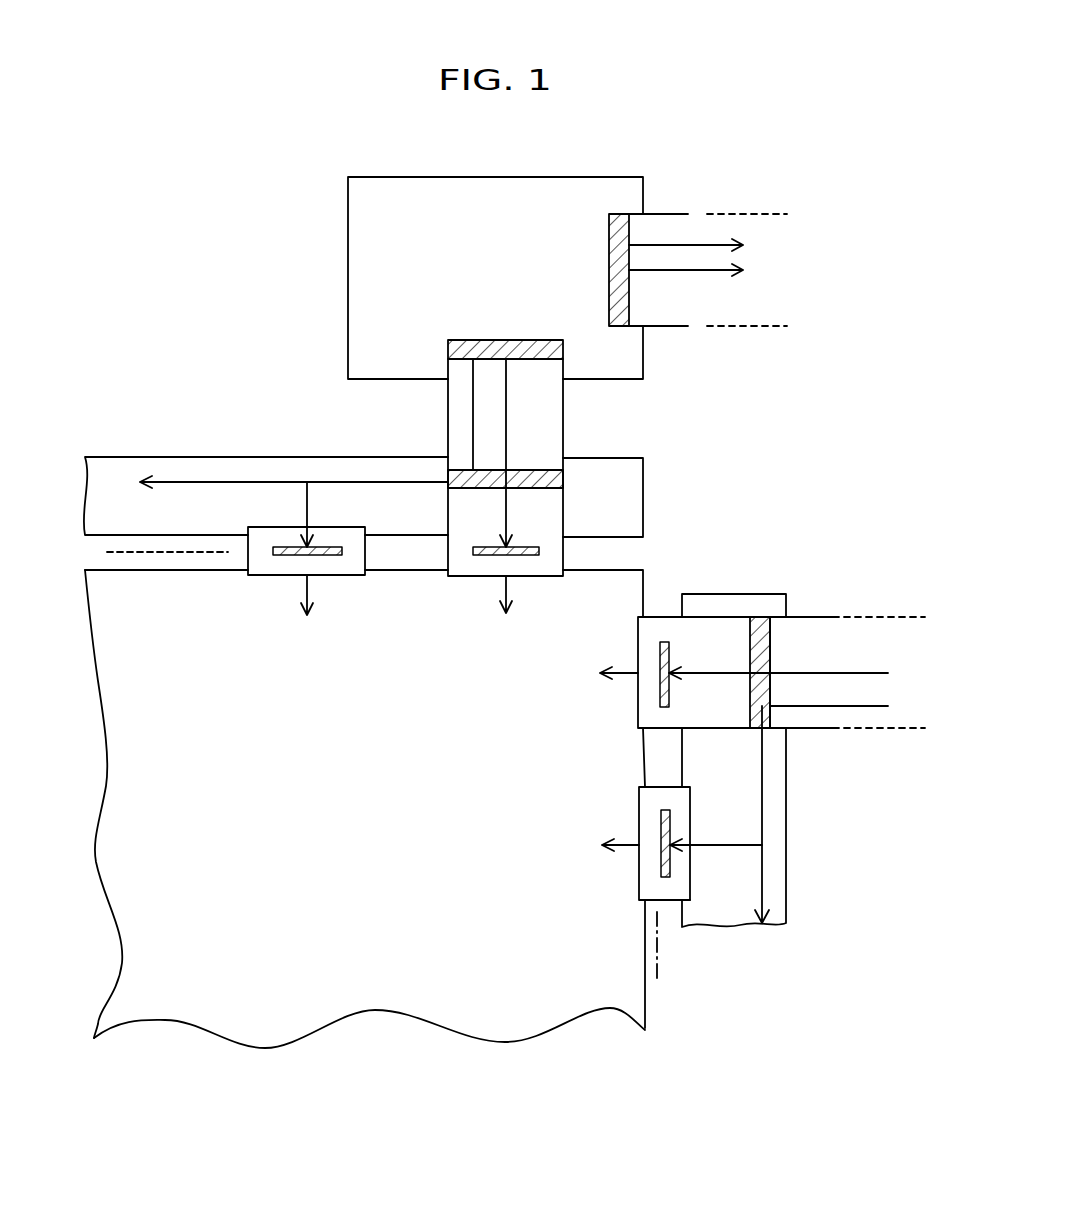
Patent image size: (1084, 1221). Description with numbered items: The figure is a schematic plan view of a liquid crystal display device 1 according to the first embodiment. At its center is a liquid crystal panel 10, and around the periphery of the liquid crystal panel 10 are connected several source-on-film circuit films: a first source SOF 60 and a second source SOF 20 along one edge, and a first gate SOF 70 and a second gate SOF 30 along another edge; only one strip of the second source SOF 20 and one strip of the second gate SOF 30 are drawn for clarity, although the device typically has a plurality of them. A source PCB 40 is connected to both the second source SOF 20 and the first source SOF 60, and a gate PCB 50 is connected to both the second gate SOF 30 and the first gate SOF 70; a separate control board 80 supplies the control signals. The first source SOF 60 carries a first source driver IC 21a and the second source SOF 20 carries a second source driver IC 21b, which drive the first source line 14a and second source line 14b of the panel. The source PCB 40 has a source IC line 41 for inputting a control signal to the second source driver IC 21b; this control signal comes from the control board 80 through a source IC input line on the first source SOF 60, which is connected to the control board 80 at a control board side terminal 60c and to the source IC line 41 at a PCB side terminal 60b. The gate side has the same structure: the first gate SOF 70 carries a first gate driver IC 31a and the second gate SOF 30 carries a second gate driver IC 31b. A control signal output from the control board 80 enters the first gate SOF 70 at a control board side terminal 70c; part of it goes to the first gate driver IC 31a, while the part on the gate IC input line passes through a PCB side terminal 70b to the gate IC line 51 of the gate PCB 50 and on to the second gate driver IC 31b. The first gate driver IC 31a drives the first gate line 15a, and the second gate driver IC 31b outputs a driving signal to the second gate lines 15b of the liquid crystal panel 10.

The liquid crystal display device 1 is at (145, 306).
The liquid crystal panel 10 is at (635, 1005).
The first source line 14a is at (492, 593).
The second source line 14b is at (318, 593).
The first gate line 15a is at (618, 680).
The second gate line 15b is at (622, 840).
The second source SOF 20 is at (276, 570).
The first source driver IC 21a is at (473, 550).
The second source driver IC 21b is at (285, 550).
The second gate SOF 30 is at (639, 862).
The first gate driver IC 31a is at (660, 700).
The second gate driver IC 31b is at (662, 877).
The source PCB 40 is at (643, 472).
The source IC line 41 is at (338, 458).
The gate PCB 50 is at (741, 605).
The gate IC line 51 is at (762, 762).
The first source SOF 60 is at (538, 565).
The PCB side terminal 60b is at (548, 470).
The control board side terminal 60c is at (492, 340).
The first gate SOF 70 is at (669, 312).
The PCB side terminal 70b is at (765, 633).
The control board side terminal 70c is at (620, 232).
The control board 80 is at (362, 230).